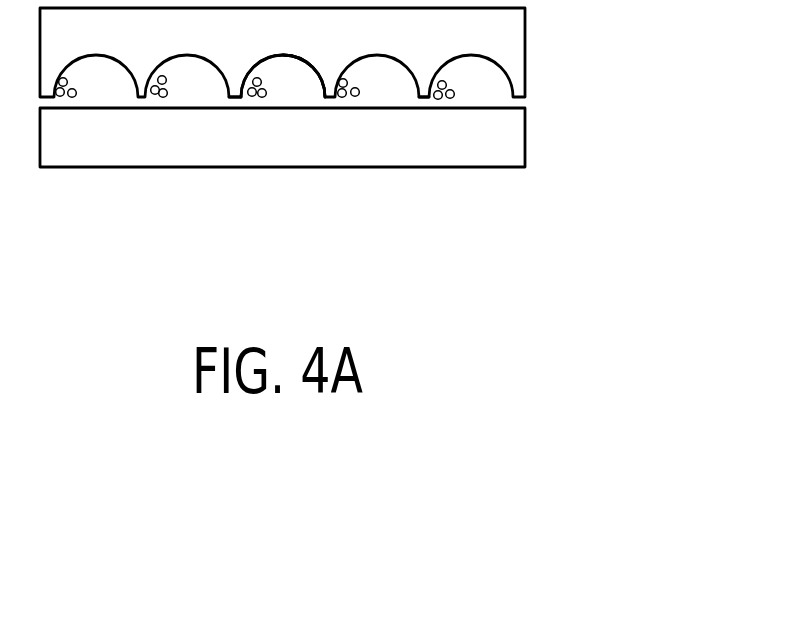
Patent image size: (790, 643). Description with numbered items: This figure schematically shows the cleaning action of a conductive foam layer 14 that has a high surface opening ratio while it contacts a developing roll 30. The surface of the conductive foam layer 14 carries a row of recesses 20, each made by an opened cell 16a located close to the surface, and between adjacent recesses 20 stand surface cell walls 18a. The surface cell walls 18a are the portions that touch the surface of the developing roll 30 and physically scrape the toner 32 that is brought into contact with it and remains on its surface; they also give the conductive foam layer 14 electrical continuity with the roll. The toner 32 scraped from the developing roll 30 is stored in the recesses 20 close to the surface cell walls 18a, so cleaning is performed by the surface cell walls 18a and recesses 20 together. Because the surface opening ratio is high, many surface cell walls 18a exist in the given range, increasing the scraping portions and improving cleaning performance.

The conductive foam layer 14 is at (525, 37).
The developing roll 30 is at (525, 133).
The opened cell 16a is at (283, 84).
The recess 20 is at (314, 68).
The surface cell wall 18a is at (235, 97).
The toner 32 is at (73, 95).